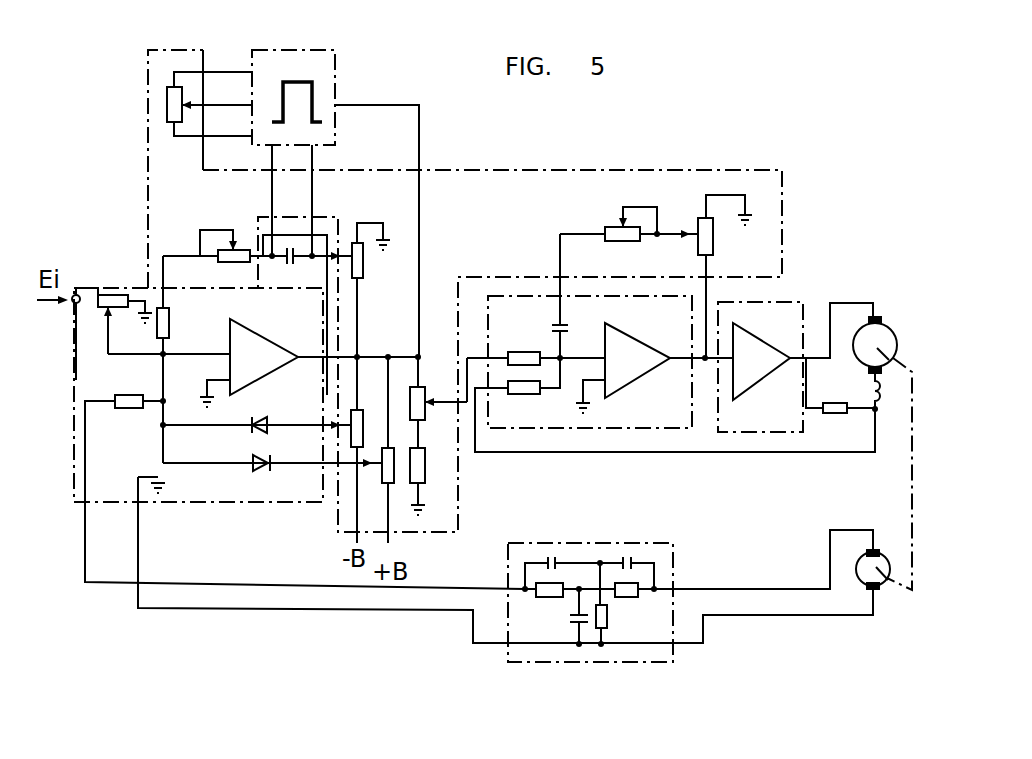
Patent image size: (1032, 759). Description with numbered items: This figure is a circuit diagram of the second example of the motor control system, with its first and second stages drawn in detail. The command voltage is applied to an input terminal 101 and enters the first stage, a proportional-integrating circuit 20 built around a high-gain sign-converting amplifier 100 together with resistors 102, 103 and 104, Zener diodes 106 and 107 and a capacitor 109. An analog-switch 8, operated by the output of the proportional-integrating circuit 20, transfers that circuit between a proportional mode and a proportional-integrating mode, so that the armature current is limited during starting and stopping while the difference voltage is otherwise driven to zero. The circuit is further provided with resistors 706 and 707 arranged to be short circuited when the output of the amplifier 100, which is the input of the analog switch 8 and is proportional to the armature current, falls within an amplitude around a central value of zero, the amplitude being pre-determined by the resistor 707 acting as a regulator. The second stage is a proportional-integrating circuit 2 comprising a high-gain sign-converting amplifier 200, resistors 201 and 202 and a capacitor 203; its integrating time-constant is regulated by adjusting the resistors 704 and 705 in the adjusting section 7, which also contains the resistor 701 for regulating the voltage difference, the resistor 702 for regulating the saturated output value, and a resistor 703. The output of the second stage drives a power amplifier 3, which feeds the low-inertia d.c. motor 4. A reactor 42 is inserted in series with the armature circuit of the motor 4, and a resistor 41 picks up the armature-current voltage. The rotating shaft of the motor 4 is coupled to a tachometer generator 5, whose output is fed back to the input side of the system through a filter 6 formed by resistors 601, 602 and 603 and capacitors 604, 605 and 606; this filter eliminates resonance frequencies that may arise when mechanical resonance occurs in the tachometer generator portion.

The proportional-integrating circuit 2 is at (683, 397).
The power amplifier 3 is at (777, 312).
The d.c. motor 4 is at (884, 337).
The tachometer generator 5 is at (883, 580).
The filter 6 is at (663, 650).
The adjusting section 7 is at (750, 185).
The analog-switch 8 is at (325, 92).
The proportional-integrating circuit 20 is at (207, 485).
The resistor 41 is at (835, 414).
The reactor 42 is at (868, 390).
The high-gain sign-converting amplifier 100 is at (258, 342).
The input terminal 101 is at (73, 304).
The resistor 102 is at (112, 295).
The resistor 103 is at (168, 322).
The resistor 104 is at (130, 393).
The Zener diode 106 is at (262, 473).
The Zener diode 107 is at (260, 417).
The capacitor 109 is at (290, 266).
The high-gain sign-converting amplifier 200 is at (627, 343).
The resistor 201 is at (527, 352).
The resistor 202 is at (523, 394).
The capacitor 203 is at (567, 333).
The resistor 601 is at (548, 597).
The resistor 602 is at (626, 597).
The resistor 603 is at (607, 624).
The capacitor 604 is at (550, 557).
The capacitor 605 is at (626, 557).
The capacitor 606 is at (567, 622).
The resistor 701 is at (363, 265).
The resistor 702 is at (412, 387).
The resistor 703 is at (425, 468).
The resistor 704 is at (625, 240).
The resistor 705 is at (712, 240).
The resistor 706 is at (240, 250).
The resistor 707 is at (167, 105).